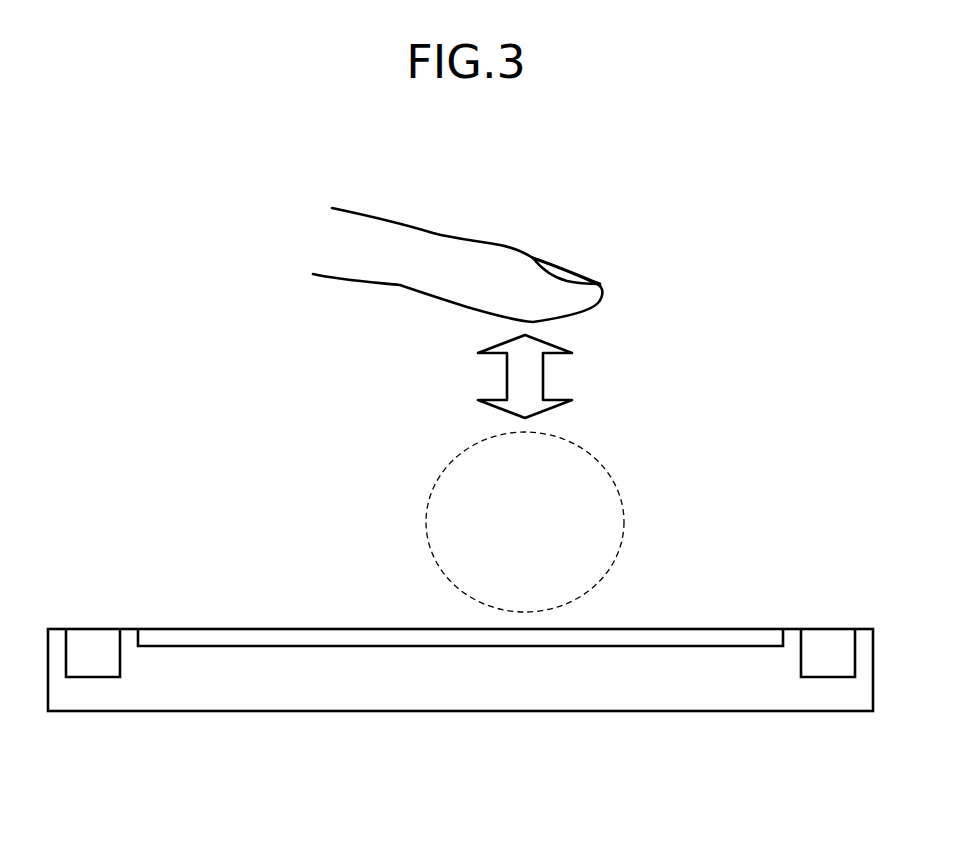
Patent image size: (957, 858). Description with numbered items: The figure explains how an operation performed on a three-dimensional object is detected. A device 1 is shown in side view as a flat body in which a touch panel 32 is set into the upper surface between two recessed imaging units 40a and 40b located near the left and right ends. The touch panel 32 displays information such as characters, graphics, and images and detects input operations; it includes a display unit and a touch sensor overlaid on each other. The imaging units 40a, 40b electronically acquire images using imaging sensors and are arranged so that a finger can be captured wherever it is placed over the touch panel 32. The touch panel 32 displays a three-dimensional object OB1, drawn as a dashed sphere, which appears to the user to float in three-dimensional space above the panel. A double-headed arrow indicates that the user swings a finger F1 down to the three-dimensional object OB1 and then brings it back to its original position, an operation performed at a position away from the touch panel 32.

The finger F1 is at (470, 238).
The three-dimensional object OB1 is at (623, 508).
The display device 1 is at (690, 711).
The imaging unit 40a is at (826, 627).
The imaging unit 40b is at (92, 627).
The touch panel 32 is at (177, 627).